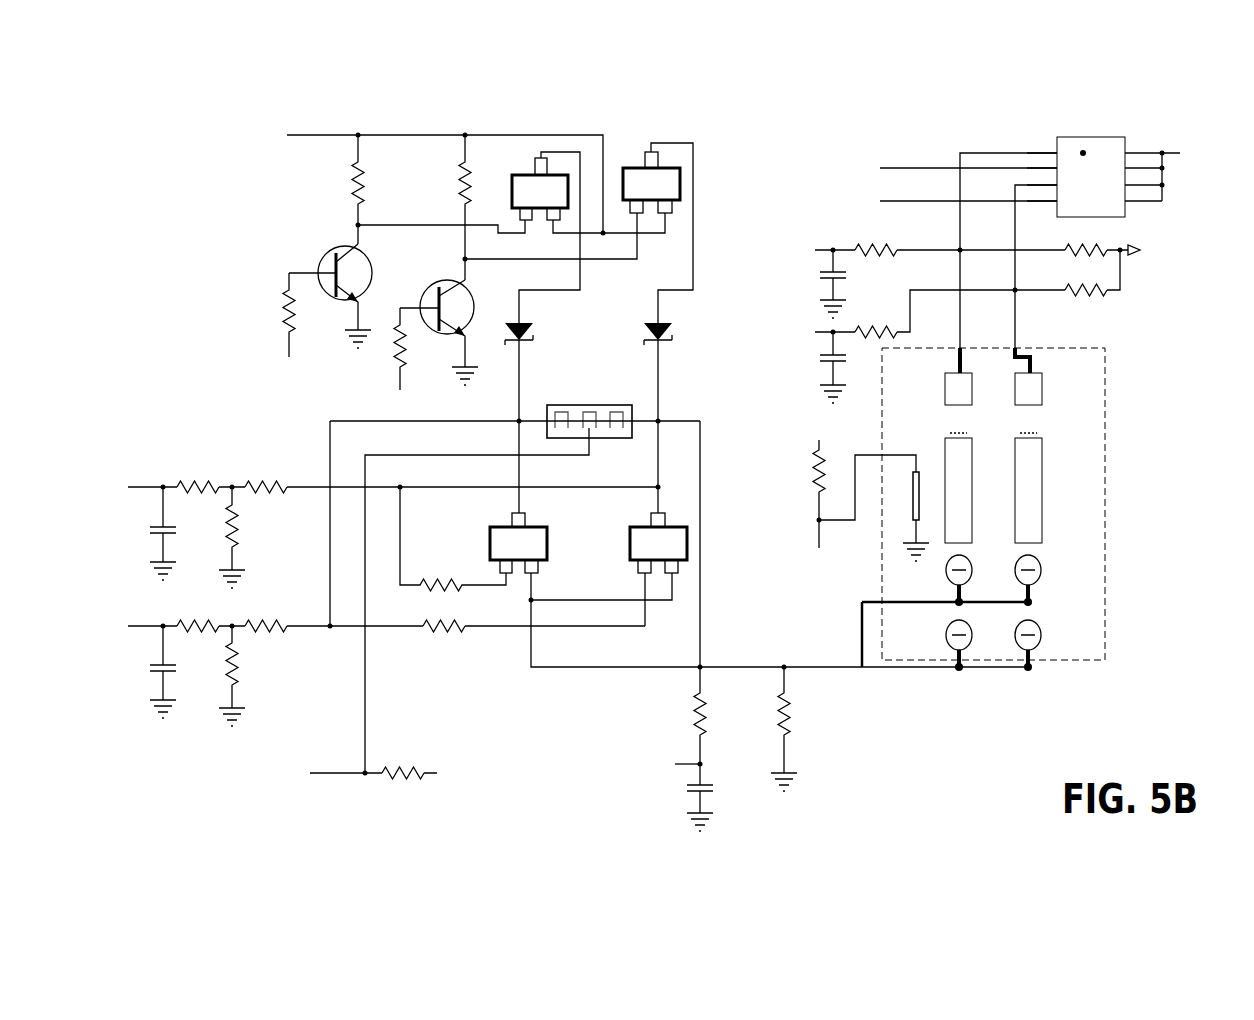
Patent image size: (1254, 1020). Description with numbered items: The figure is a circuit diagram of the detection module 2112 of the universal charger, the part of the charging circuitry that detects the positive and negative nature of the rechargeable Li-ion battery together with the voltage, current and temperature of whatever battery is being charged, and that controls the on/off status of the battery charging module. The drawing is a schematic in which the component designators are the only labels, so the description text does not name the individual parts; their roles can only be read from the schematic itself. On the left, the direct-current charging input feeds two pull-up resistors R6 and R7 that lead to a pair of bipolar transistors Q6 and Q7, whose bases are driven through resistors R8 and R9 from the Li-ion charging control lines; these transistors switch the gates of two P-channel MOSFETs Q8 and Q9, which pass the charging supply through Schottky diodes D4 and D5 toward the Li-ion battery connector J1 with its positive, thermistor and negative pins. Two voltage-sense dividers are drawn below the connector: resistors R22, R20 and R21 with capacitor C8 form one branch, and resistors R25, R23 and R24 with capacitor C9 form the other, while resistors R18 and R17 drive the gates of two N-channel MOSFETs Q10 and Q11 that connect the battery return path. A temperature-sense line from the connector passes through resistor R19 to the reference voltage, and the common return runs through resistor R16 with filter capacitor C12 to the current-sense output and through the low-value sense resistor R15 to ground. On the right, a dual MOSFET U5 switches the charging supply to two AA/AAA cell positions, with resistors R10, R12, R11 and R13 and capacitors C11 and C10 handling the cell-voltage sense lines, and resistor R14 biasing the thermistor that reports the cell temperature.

The detection module 2112 is at (770, 126).
The resistor R6 is at (366, 180).
The resistor R7 is at (473, 197).
The resistor R8 is at (297, 315).
The resistor R9 is at (408, 349).
The NPN transistor Q6 is at (340, 296).
The NPN transistor Q7 is at (447, 330).
The P-channel MOSFET Si2301DS Q8 is at (539, 165).
The P-channel MOSFET Si2301DS Q9 is at (651, 161).
The Schottky diode SS14 D4 is at (537, 326).
The Schottky diode SS14 D5 is at (676, 326).
The Li battery connector J1 is at (590, 421).
The resistor R22 is at (198, 478).
The resistor 51K R20 is at (272, 485).
The resistor 20K R21 is at (254, 537).
The capacitor C8 is at (173, 533).
The resistor R25 is at (198, 617).
The resistor 51K R23 is at (272, 624).
The resistor 20K R24 is at (254, 676).
The capacitor C9 is at (173, 672).
The resistor R18 is at (444, 616).
The resistor R17 is at (453, 539).
The N-channel MOSFET Si2302DS Q10 is at (494, 546).
The N-channel MOSFET Si2302DS Q11 is at (634, 546).
The resistor 10K R19 is at (398, 772).
The resistor R16 is at (713, 715).
The capacitor C12 is at (714, 797).
The current sense resistor 0.1R R15 is at (808, 729).
The dual MOSFET 9926 U5 is at (1103, 168).
The resistor R10 is at (876, 241).
The resistor R12 is at (1086, 241).
The resistor R11 is at (876, 323).
The resistor R13 is at (1086, 281).
The capacitor C11 is at (847, 284).
The capacitor C10 is at (847, 367).
The resistor 10K R14 is at (792, 494).